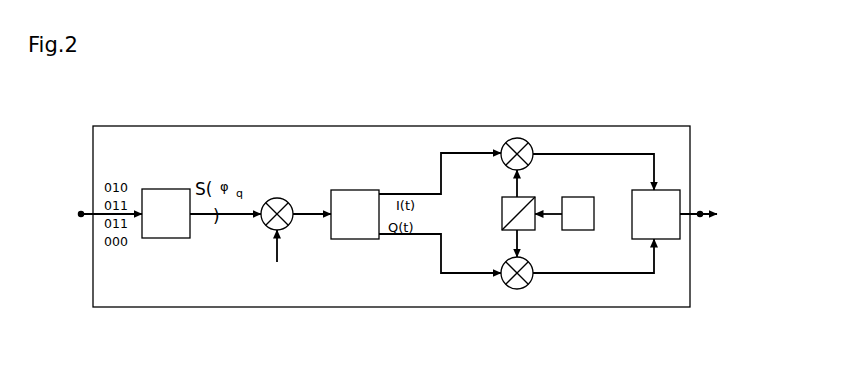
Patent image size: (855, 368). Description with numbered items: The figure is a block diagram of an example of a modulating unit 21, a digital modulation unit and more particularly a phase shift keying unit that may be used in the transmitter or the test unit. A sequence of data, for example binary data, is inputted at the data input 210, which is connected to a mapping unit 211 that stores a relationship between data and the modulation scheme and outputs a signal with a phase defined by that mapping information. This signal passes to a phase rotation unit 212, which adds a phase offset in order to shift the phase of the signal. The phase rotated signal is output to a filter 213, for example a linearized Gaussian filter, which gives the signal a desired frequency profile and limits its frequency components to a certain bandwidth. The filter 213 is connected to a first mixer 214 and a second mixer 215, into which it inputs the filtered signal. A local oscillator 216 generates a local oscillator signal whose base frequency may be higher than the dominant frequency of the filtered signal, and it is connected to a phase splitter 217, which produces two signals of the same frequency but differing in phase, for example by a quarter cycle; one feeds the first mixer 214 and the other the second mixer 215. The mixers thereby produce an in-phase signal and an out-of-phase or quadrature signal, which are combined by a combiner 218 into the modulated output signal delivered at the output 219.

The modulating unit 21 is at (123, 150).
The data input 210 is at (81, 214).
The mapping unit 211 is at (183, 198).
The phase rotation unit 212 is at (284, 203).
The filter 213 is at (356, 198).
The first mixer 214 is at (519, 144).
The second mixer 215 is at (518, 284).
The local oscillator 216 is at (593, 216).
The phase splitter 217 is at (536, 200).
The summer 218 is at (672, 200).
The output 219 is at (701, 216).